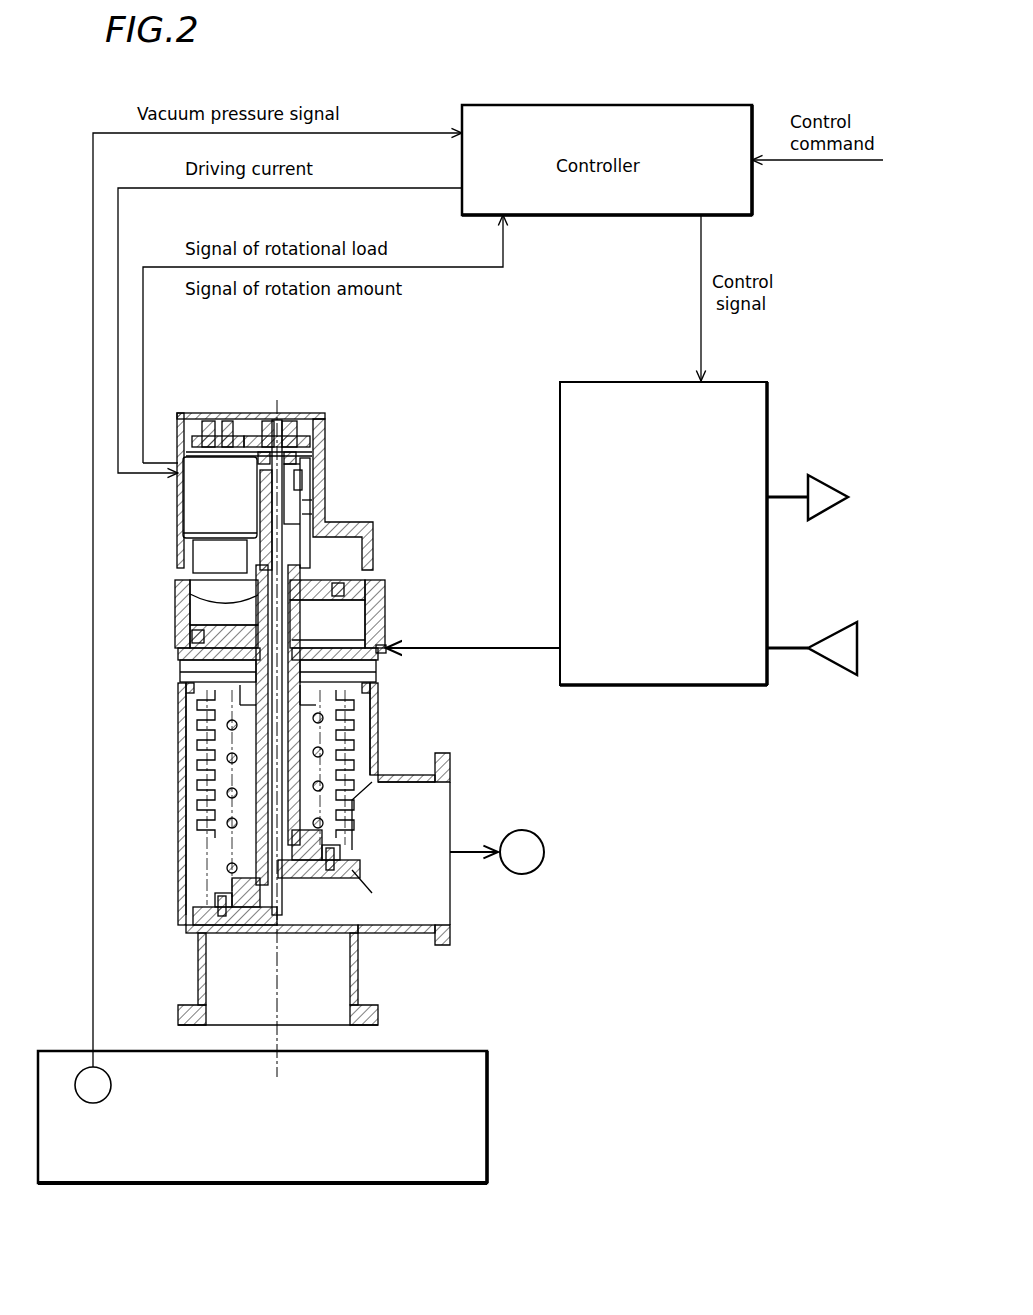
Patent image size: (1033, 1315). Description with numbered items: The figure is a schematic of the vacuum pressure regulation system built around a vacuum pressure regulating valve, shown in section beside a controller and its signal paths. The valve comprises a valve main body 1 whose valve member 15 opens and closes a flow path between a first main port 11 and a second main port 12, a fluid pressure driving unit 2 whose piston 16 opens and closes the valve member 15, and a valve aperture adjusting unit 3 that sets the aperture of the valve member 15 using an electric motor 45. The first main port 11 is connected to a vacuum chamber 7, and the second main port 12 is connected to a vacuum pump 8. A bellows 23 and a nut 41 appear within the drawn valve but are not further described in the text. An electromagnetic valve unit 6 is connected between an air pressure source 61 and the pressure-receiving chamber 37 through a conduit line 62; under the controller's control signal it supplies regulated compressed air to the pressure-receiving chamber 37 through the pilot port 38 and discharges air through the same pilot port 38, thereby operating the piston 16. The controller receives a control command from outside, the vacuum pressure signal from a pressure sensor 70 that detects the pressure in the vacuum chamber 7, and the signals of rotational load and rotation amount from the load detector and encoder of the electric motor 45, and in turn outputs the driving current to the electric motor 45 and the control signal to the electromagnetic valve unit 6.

The valve main body 1 is at (318, 832).
The fluid pressure driving unit 2 is at (375, 579).
The valve aperture adjusting unit 3 is at (295, 485).
The electromagnetic valve unit 6 is at (704, 526).
The vacuum chamber 7 is at (229, 1168).
The vacuum pump 8 is at (540, 848).
The first main port 11 is at (340, 973).
The second main port 12 is at (445, 912).
The valve member 15 is at (360, 866).
The piston 16 is at (228, 640).
The bellows 23 is at (228, 758).
The pressure-receiving chamber 37 is at (345, 634).
The pilot port 38 is at (386, 649).
The nut 41 is at (250, 598).
The electric motor 45 is at (188, 512).
The air pressure source 61 is at (834, 630).
The conduit line 62 is at (503, 647).
The pressure sensor 70 is at (103, 1080).